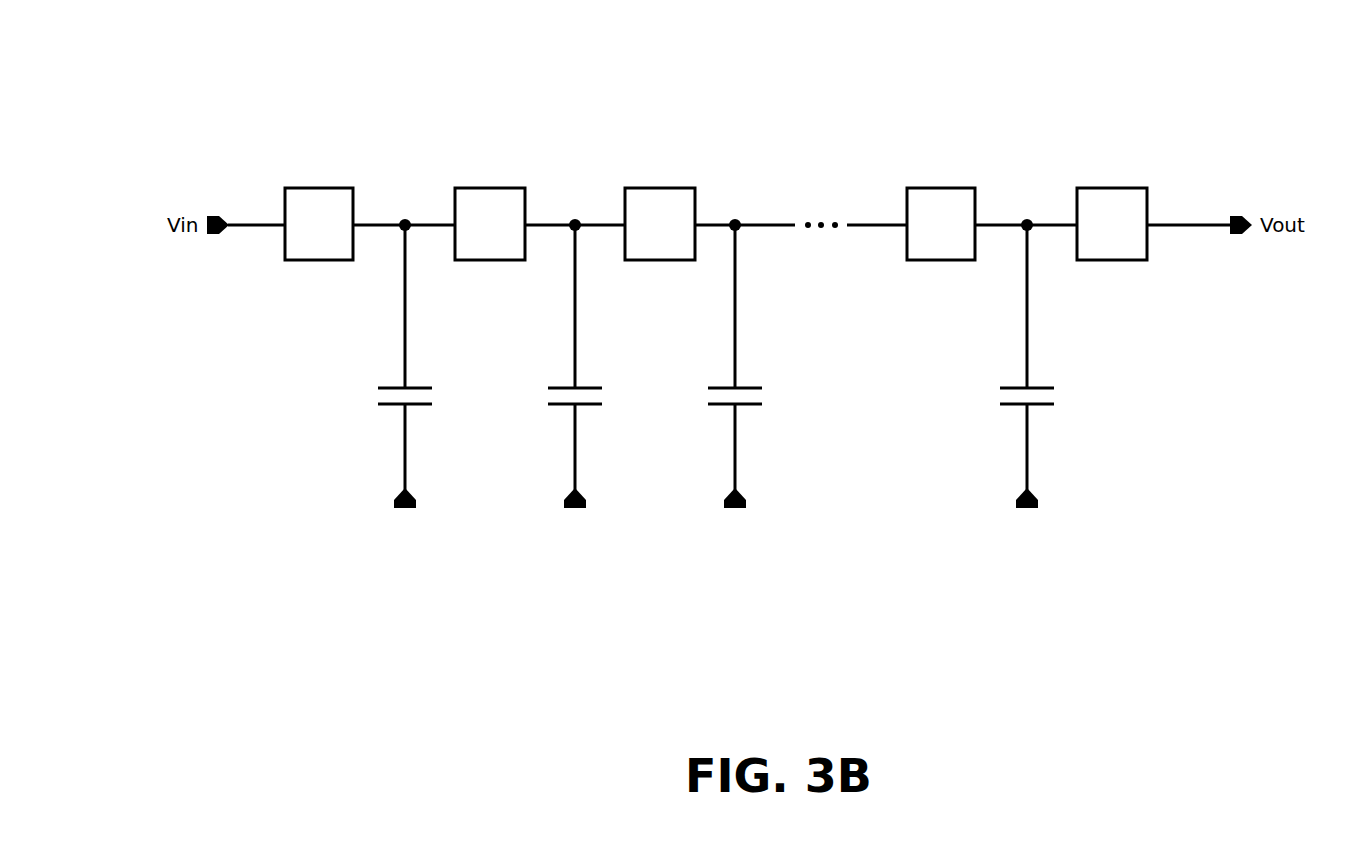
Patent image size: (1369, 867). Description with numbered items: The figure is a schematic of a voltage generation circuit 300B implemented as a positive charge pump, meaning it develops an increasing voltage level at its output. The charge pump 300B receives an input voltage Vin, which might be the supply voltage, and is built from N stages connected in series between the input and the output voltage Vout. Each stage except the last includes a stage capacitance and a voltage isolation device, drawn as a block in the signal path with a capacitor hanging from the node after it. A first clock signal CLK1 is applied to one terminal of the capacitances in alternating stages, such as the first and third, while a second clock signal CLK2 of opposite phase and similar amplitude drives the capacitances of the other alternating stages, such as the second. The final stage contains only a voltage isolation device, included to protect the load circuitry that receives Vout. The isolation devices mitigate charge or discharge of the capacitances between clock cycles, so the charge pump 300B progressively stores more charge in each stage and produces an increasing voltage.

The voltage generation circuit 300B is at (803, 578).